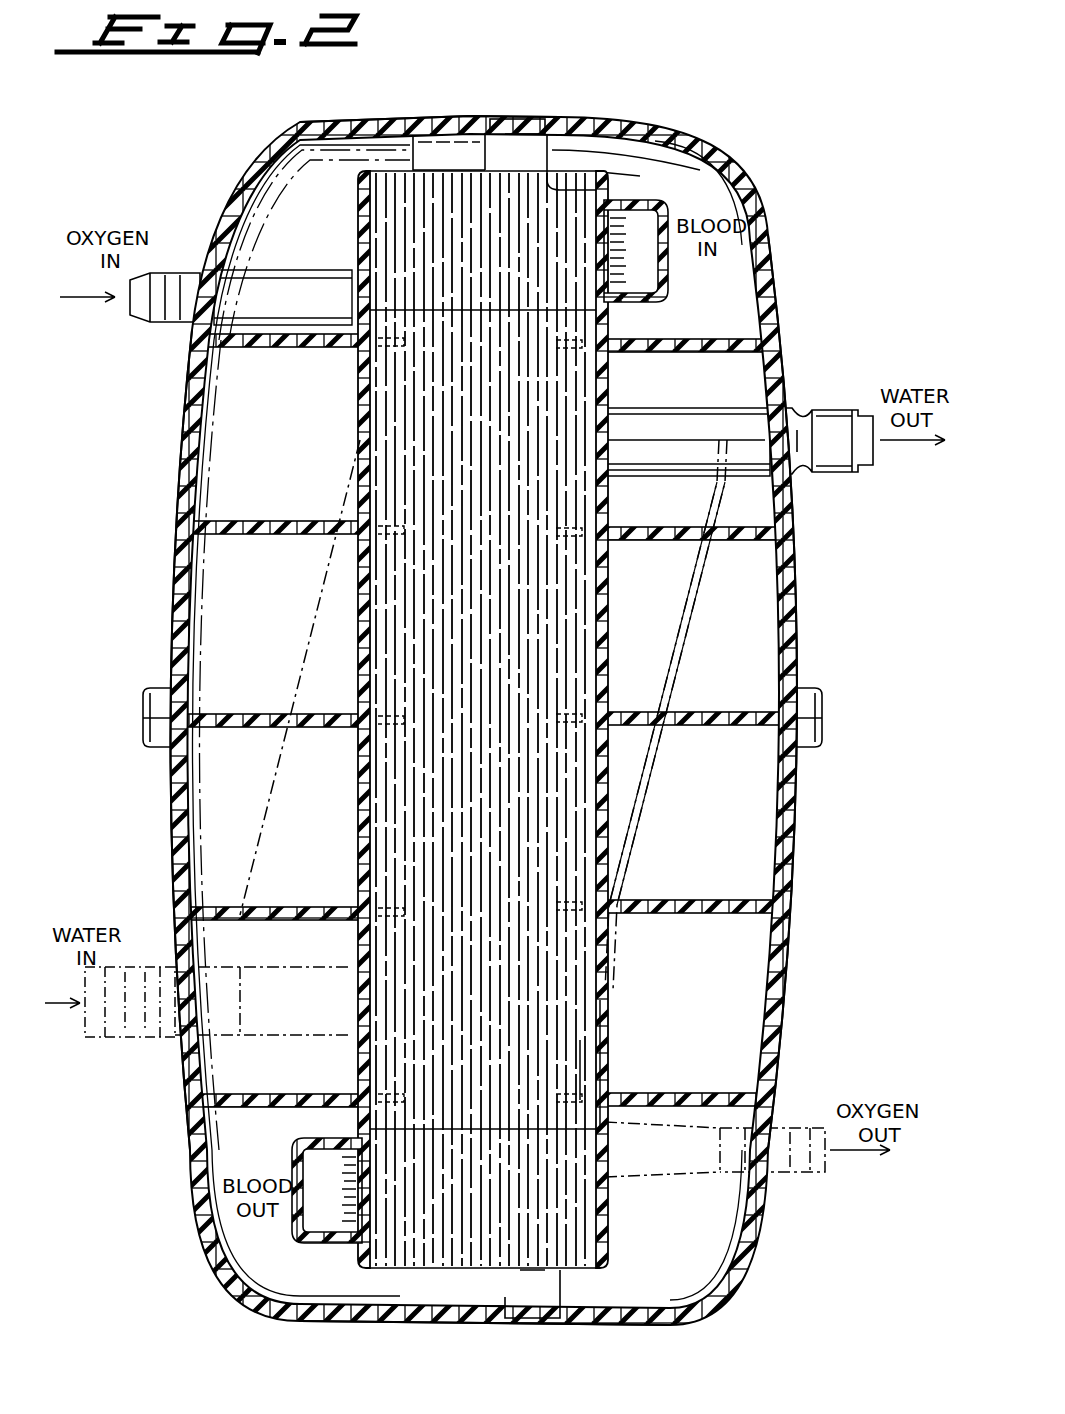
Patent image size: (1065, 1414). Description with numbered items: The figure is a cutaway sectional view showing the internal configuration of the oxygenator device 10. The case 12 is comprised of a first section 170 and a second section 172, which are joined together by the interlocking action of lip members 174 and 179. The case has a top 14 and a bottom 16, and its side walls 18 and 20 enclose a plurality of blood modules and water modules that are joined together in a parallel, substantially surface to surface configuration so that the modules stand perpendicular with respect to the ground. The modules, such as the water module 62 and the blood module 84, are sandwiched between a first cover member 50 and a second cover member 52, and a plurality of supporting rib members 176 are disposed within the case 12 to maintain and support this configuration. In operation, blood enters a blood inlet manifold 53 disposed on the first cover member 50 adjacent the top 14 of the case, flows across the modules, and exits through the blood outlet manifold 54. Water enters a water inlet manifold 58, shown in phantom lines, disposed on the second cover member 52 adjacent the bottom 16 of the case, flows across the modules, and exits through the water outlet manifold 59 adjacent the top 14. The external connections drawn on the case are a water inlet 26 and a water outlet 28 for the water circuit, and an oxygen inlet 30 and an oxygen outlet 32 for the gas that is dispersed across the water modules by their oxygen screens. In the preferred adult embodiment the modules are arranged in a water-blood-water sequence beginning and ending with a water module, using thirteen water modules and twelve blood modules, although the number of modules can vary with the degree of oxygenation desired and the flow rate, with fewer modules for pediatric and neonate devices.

The blood oxygenator 10 is at (484, 721).
The case 12 is at (484, 116).
The top 14 is at (370, 130).
The bottom 16 is at (610, 1326).
The left side wall 18 is at (168, 620).
The right side wall 20 is at (798, 598).
The water inlet 26 is at (124, 972).
The water outlet 28 is at (858, 408).
The oxygen inlet 30 is at (135, 316).
The oxygen outlet 32 is at (815, 1180).
The first cover member 50 is at (612, 193).
The second cover member 52 is at (357, 220).
The blood inlet manifold 53 is at (664, 210).
The blood outlet manifold 54 is at (300, 1215).
The water inlet manifold 58 is at (306, 640).
The water outlet manifold 59 is at (700, 655).
The water module 62 is at (599, 1045).
The blood module 84 is at (578, 1068).
The first section 170 is at (446, 118).
The second section 172 is at (568, 122).
The lip member 174 is at (528, 126).
The supporting rib member 176 is at (738, 901).
The lip member 179 is at (522, 126).